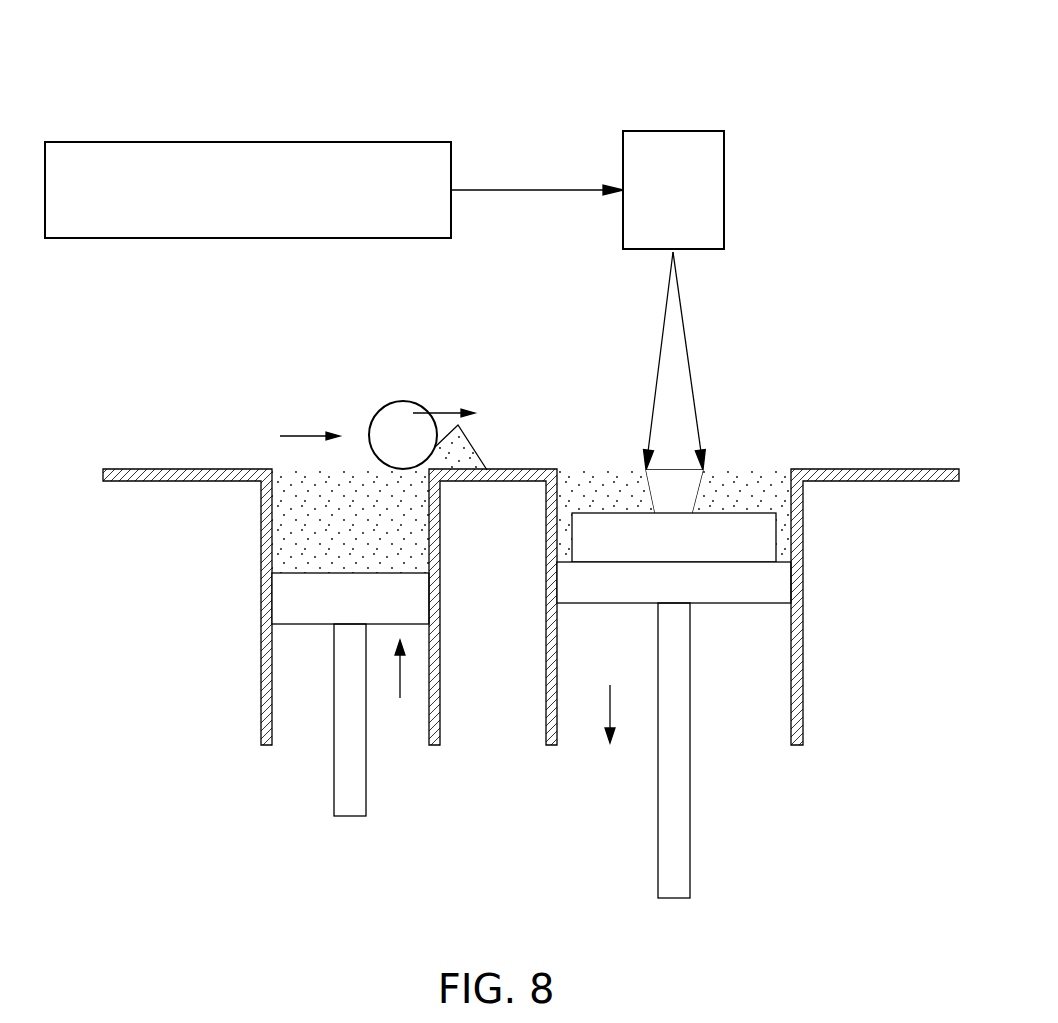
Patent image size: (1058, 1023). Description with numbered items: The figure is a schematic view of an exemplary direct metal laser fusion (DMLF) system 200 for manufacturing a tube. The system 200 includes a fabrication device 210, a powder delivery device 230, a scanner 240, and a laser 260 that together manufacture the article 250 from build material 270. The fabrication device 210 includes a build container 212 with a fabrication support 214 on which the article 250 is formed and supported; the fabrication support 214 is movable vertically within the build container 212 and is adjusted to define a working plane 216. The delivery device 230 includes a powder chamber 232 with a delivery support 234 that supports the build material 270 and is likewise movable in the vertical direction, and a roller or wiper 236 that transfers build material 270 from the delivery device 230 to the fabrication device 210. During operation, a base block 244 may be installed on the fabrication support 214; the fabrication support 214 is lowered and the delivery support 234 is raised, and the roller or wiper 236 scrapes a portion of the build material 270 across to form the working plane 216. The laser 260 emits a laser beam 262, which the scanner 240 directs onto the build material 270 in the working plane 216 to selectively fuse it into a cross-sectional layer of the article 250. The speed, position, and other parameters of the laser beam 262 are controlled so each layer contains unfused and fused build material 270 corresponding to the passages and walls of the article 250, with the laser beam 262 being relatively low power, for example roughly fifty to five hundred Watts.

The DMLF system 200 is at (502, 481).
The fabrication device 210 is at (755, 641).
The build container 212 is at (798, 498).
The fabrication support 214 is at (742, 603).
The working plane 216 is at (768, 473).
The powder delivery device 230 is at (270, 581).
The powder chamber 232 is at (263, 535).
The delivery support 234 is at (283, 595).
The roller or wiper 236 is at (403, 402).
The scanner 240 is at (677, 131).
The base block 244 is at (615, 552).
The article 250 is at (627, 449).
The laser 260 is at (257, 142).
The laser beam 262 is at (540, 190).
The build material 270 is at (283, 510).